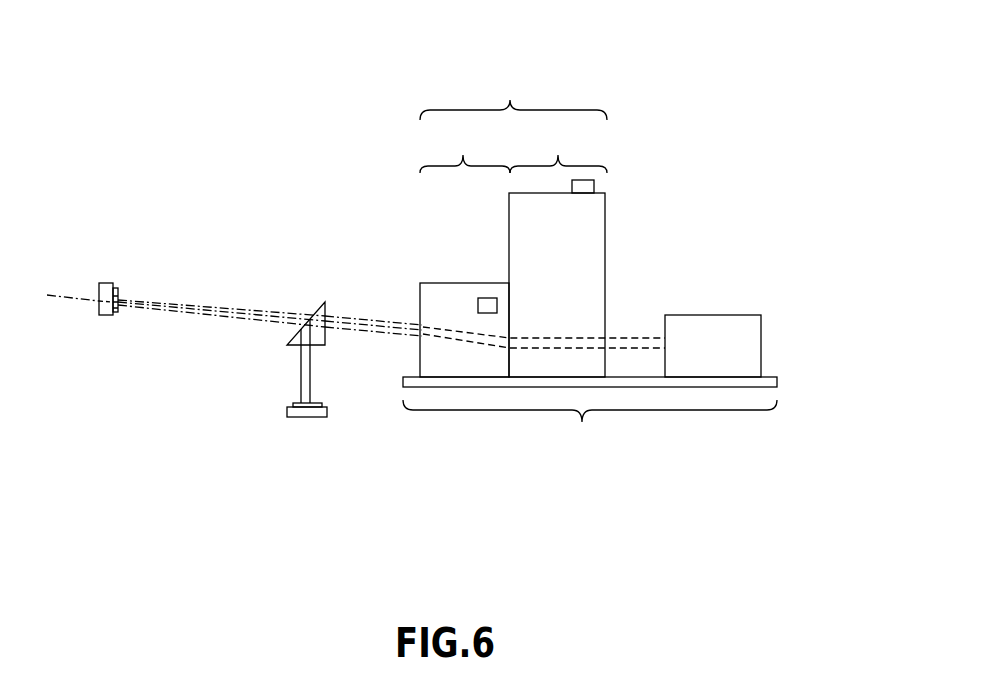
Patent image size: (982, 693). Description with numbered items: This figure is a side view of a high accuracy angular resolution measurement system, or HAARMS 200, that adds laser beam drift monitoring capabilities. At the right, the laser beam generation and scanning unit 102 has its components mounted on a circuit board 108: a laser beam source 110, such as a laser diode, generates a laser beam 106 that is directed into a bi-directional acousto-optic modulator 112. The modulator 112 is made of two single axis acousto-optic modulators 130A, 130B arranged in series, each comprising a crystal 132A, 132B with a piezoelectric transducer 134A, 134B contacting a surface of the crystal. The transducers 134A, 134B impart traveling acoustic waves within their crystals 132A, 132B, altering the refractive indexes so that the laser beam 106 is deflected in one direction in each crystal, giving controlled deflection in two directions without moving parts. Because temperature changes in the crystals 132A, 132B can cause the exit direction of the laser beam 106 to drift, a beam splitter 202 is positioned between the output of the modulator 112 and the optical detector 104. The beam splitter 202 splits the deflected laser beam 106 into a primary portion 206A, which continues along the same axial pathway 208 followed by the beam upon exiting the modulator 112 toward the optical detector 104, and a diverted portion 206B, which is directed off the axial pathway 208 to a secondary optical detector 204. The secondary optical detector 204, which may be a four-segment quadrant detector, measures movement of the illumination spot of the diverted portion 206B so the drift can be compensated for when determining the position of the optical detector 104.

The HAARMS 200 is at (290, 112).
The optical detector 104 is at (105, 282).
The axial pathway 208 is at (68, 298).
The primary portion 206A is at (183, 302).
The beam splitter 202 is at (320, 308).
The diverted portion 206B is at (301, 372).
The secondary optical detector 204 is at (318, 418).
The laser beam 106 is at (366, 330).
The crystal 132B is at (440, 283).
The piezoelectric transducer 134B is at (487, 298).
The single axis acousto-optic modulator 130B is at (465, 149).
The single axis acousto-optic modulator 130A is at (558, 149).
The bi-directional acousto-optic modulator 112 is at (513, 96).
The crystal 132A is at (607, 232).
The piezoelectric transducer 134A is at (597, 188).
The laser beam source 110 is at (733, 315).
The circuit board 108 is at (780, 378).
The laser beam generation and scanning unit 102 is at (590, 429).